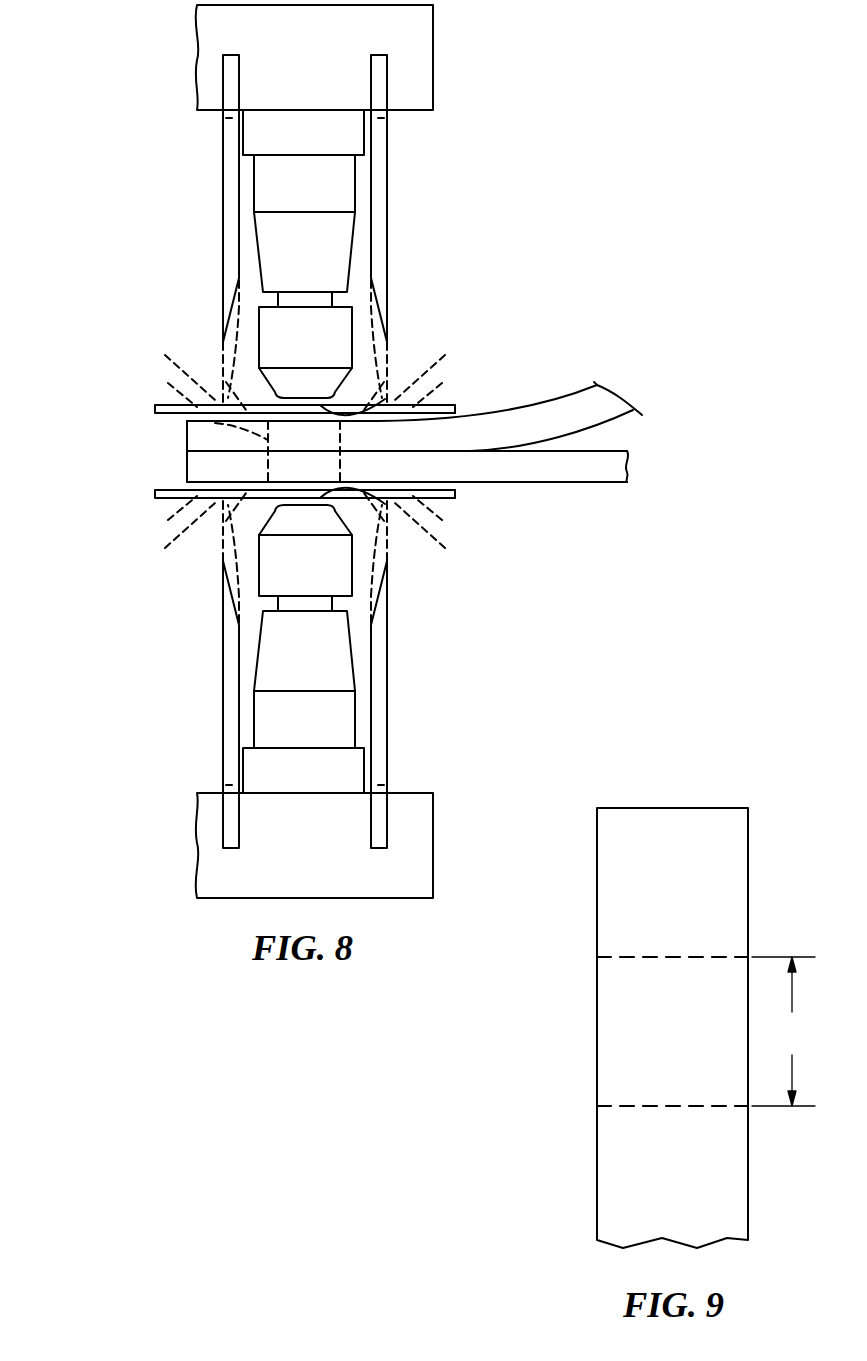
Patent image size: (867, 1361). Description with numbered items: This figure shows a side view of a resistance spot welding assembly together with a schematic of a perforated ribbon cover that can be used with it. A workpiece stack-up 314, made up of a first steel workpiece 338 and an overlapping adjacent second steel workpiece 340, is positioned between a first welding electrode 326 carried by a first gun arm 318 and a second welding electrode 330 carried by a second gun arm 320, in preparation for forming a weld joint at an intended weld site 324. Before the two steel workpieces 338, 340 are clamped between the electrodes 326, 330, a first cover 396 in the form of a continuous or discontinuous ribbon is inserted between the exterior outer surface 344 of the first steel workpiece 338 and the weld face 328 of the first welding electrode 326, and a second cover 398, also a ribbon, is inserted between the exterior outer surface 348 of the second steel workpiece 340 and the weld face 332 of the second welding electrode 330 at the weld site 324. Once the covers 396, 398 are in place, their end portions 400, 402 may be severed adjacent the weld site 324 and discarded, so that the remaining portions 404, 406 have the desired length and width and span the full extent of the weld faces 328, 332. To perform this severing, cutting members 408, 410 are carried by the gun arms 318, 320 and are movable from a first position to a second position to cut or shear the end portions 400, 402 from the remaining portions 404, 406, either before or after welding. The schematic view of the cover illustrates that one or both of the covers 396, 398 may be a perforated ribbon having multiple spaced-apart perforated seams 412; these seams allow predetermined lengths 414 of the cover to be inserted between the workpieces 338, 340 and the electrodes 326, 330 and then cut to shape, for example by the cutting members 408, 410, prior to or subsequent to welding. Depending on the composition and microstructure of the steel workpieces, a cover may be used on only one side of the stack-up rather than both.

In FIG. 8, the workpiece stack-up 314 is at (383, 456).
In FIG. 8, the first gun arm 318 is at (435, 72).
In FIG. 8, the second gun arm 320 is at (433, 845).
In FIG. 8, the weld site 324 is at (281, 451).
In FIG. 8, the first welding electrode 326 is at (243, 322).
In FIG. 8, the weld face of the first welding electrode 328 is at (385, 398).
In FIG. 8, the second welding electrode 330 is at (243, 581).
In FIG. 8, the weld face of the second welding electrode 332 is at (385, 500).
In FIG. 8, the first steel workpiece 338 is at (612, 427).
In FIG. 8, the second steel workpiece 340 is at (587, 485).
In FIG. 8, the exterior outer surface of the first steel workpiece 344 is at (547, 402).
In FIG. 8, the exterior outer surface of the second steel workpiece 348 is at (545, 485).
In FIG. 8, the first cover 396 is at (280, 384).
In FIG. 9, the first cover 396 is at (582, 1028).
In FIG. 8, the second cover 398 is at (280, 519).
In FIG. 9, the second cover 398 is at (586, 1067).
In FIG. 8, the end portion of the first cover 400 is at (445, 404).
In FIG. 8, the end portion of the second cover 402 is at (445, 498).
In FIG. 8, the remaining portion of the first cover 404 is at (243, 403).
In FIG. 8, the remaining portion of the second cover 406 is at (252, 577).
In FIG. 8, the cutting member 408 is at (388, 240).
In FIG. 8, the cutting member 410 is at (388, 690).
In FIG. 9, the perforated seams 412 is at (668, 957).
In FIG. 9, the predetermined lengths 414 is at (783, 1031).